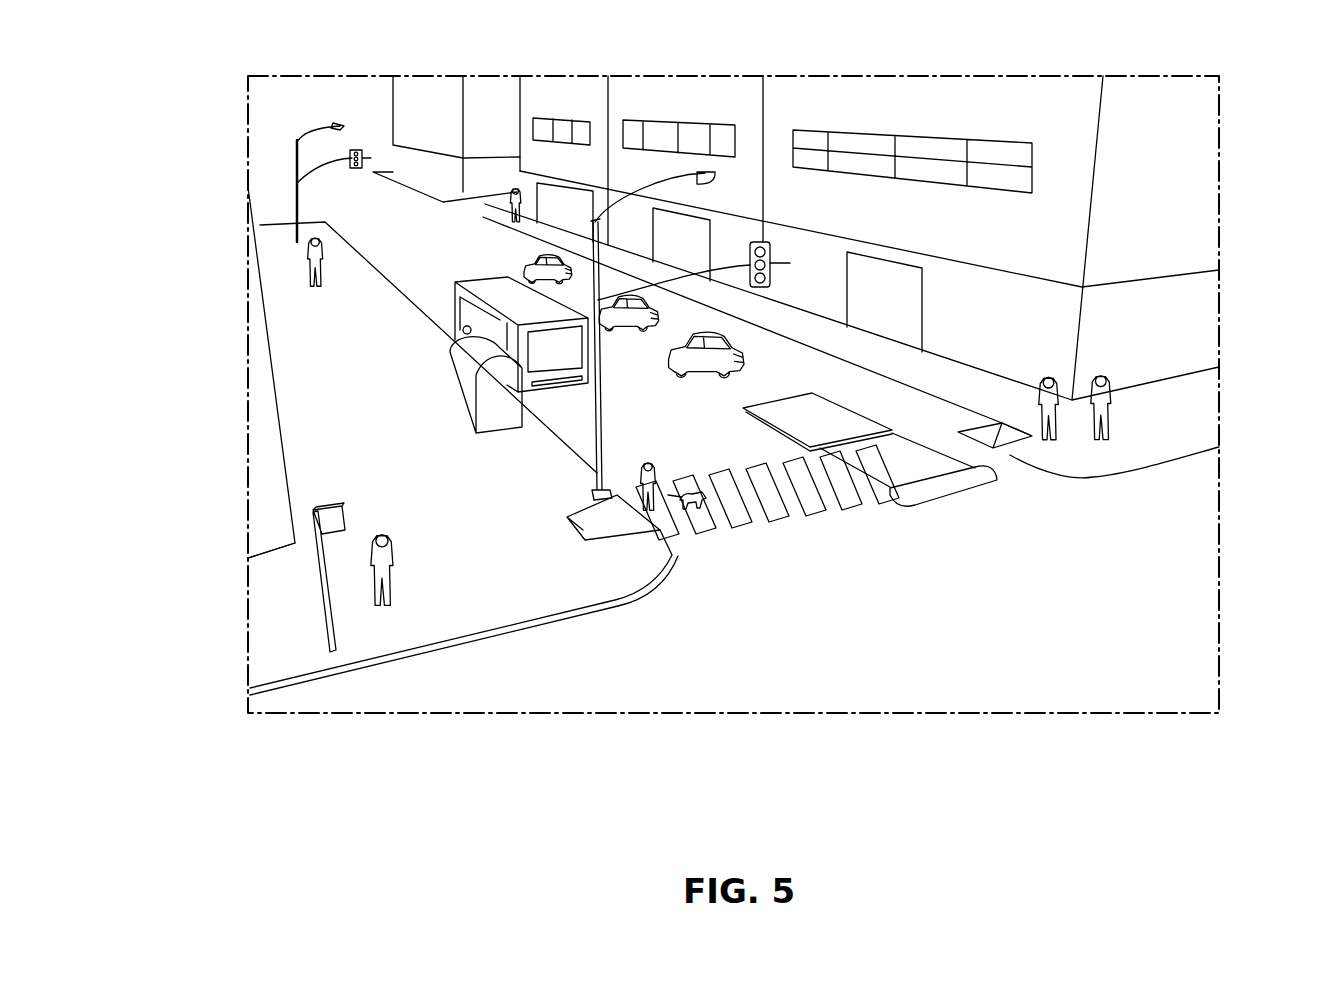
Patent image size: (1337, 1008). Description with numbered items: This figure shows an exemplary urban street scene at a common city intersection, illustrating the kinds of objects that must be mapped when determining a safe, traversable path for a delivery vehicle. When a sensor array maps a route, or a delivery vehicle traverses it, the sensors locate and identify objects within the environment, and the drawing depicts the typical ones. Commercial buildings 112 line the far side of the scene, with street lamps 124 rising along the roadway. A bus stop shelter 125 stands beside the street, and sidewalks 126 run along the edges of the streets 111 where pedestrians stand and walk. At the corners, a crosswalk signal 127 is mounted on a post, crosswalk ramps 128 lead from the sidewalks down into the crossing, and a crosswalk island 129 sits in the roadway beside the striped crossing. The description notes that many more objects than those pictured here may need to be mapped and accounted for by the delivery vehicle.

The street 111 is at (1190, 515).
The commercial building 112 is at (1195, 213).
The street lamp 124 is at (297, 140).
The bus stop shelter 125 is at (462, 388).
The sidewalk 126 is at (1200, 413).
The crosswalk signal 127 is at (322, 602).
The crosswalk ramp 128 is at (583, 530).
The crosswalk island 129 is at (947, 489).